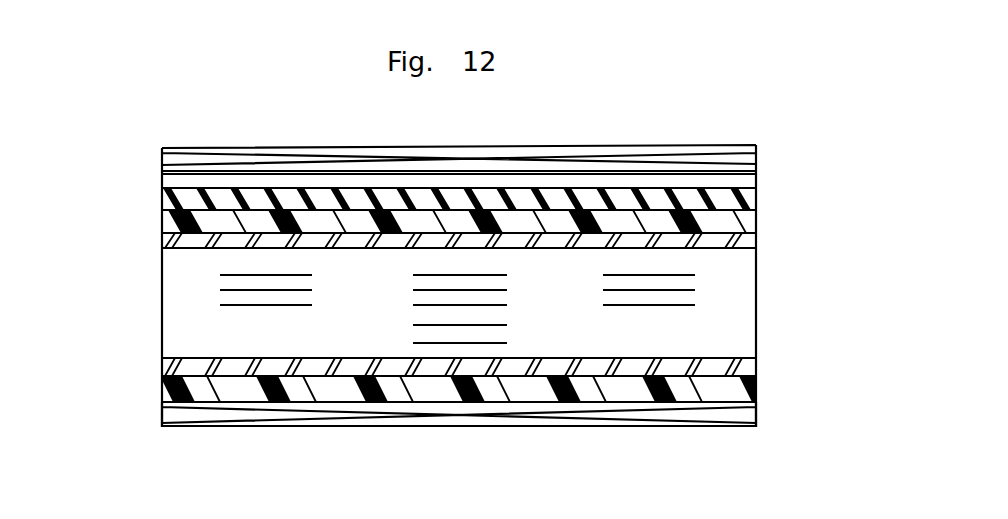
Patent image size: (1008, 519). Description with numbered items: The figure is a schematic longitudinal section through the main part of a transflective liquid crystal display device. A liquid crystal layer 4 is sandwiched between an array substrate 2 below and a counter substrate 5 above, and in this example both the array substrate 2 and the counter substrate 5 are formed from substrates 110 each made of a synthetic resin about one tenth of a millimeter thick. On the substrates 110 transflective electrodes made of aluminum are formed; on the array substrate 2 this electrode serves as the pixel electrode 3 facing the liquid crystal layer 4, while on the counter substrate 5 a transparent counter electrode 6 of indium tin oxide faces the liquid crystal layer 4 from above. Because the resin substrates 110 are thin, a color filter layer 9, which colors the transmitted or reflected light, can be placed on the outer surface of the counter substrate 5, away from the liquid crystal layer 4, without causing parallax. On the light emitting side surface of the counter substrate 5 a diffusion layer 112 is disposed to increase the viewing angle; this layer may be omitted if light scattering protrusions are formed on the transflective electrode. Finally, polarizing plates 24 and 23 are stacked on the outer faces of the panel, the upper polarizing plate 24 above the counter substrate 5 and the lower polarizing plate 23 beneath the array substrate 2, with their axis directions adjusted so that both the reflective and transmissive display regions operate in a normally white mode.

The polarizing plate 24 is at (164, 153).
The diffusion layer 112 is at (758, 176).
The color filter layer 9 is at (758, 198).
The substrate 110 is at (758, 228).
The counter electrode 6 is at (758, 243).
The counter substrate 5 is at (89, 195).
The liquid crystal layer 4 is at (88, 258).
The pixel electrode 3 is at (758, 364).
The array substrate 2 is at (88, 364).
The polarizing plate 23 is at (283, 426).